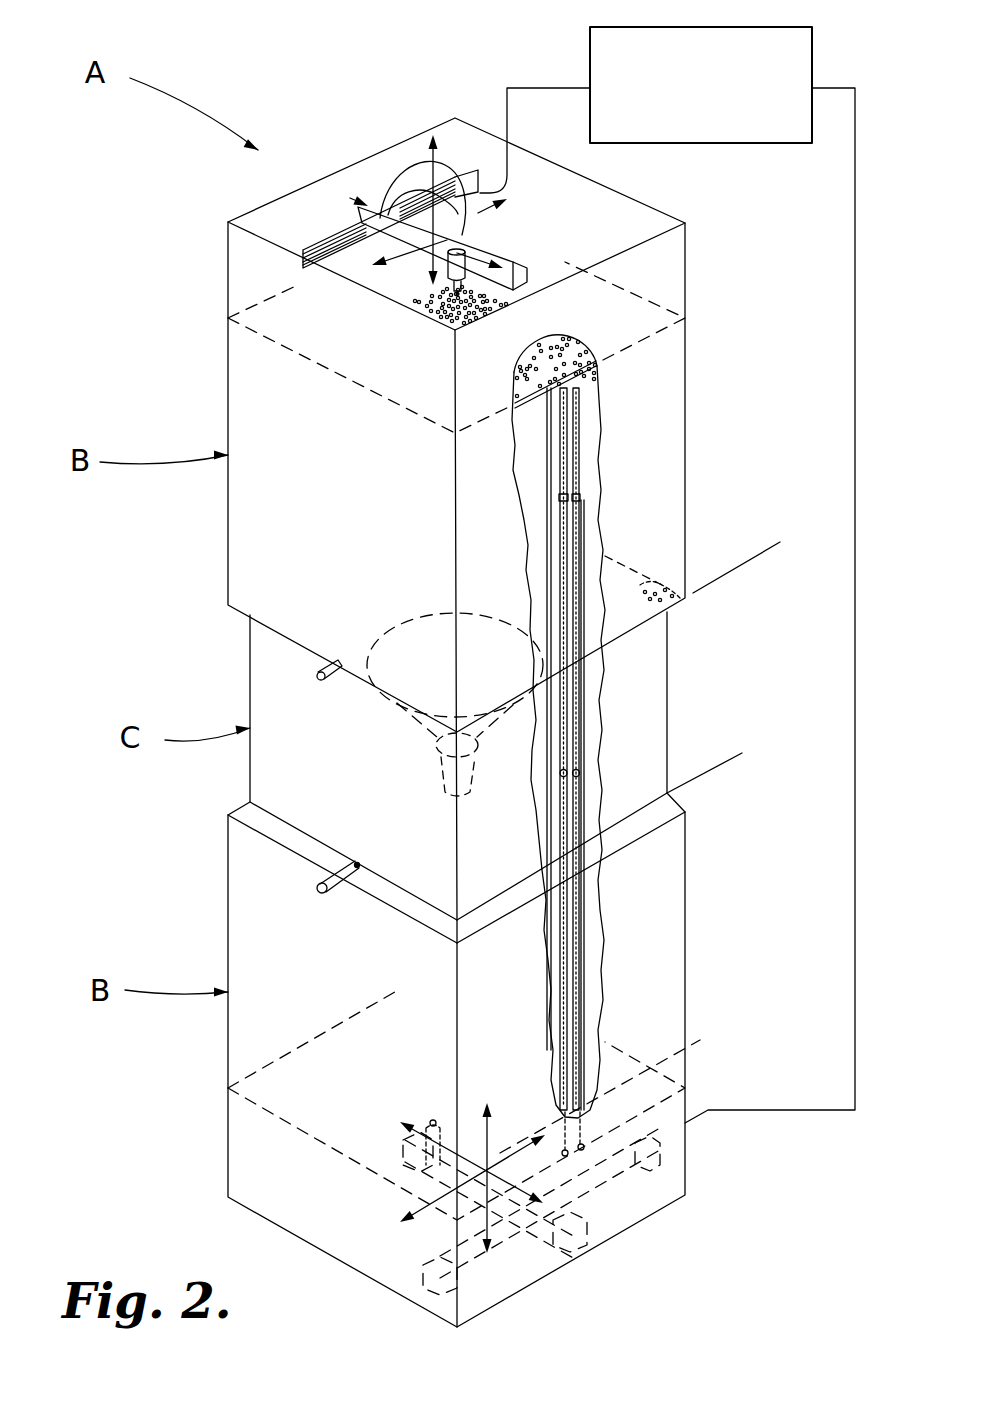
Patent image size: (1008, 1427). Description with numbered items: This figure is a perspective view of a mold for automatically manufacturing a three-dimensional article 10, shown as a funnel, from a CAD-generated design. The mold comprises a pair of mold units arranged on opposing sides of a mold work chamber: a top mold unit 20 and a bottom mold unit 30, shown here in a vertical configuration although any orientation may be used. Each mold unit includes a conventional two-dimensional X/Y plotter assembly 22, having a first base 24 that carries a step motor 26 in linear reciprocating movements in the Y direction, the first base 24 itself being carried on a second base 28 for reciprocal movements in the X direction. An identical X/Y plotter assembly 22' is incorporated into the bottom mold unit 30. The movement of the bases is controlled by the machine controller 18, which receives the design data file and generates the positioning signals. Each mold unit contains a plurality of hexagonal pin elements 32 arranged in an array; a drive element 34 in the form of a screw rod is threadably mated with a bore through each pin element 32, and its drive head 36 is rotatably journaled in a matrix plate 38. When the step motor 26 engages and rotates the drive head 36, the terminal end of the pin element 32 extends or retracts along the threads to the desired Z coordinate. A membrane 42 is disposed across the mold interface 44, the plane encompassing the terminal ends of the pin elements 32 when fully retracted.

The article 10 is at (413, 738).
The machine controller 18 is at (590, 40).
The top mold unit 20 is at (322, 496).
The X/Y plotter assembly 22 is at (508, 212).
The X/Y plotter assembly 22' is at (582, 1167).
The first base 24 is at (517, 272).
The step motor 26 is at (417, 287).
The second base 28 is at (317, 243).
The bottom mold unit 30 is at (308, 981).
The pin elements 32 is at (582, 747).
The drive element 34 is at (578, 453).
The drive head 36 is at (573, 338).
The matrix plate 38 is at (690, 298).
The membrane 42 is at (662, 576).
The mold interface 44 is at (766, 546).